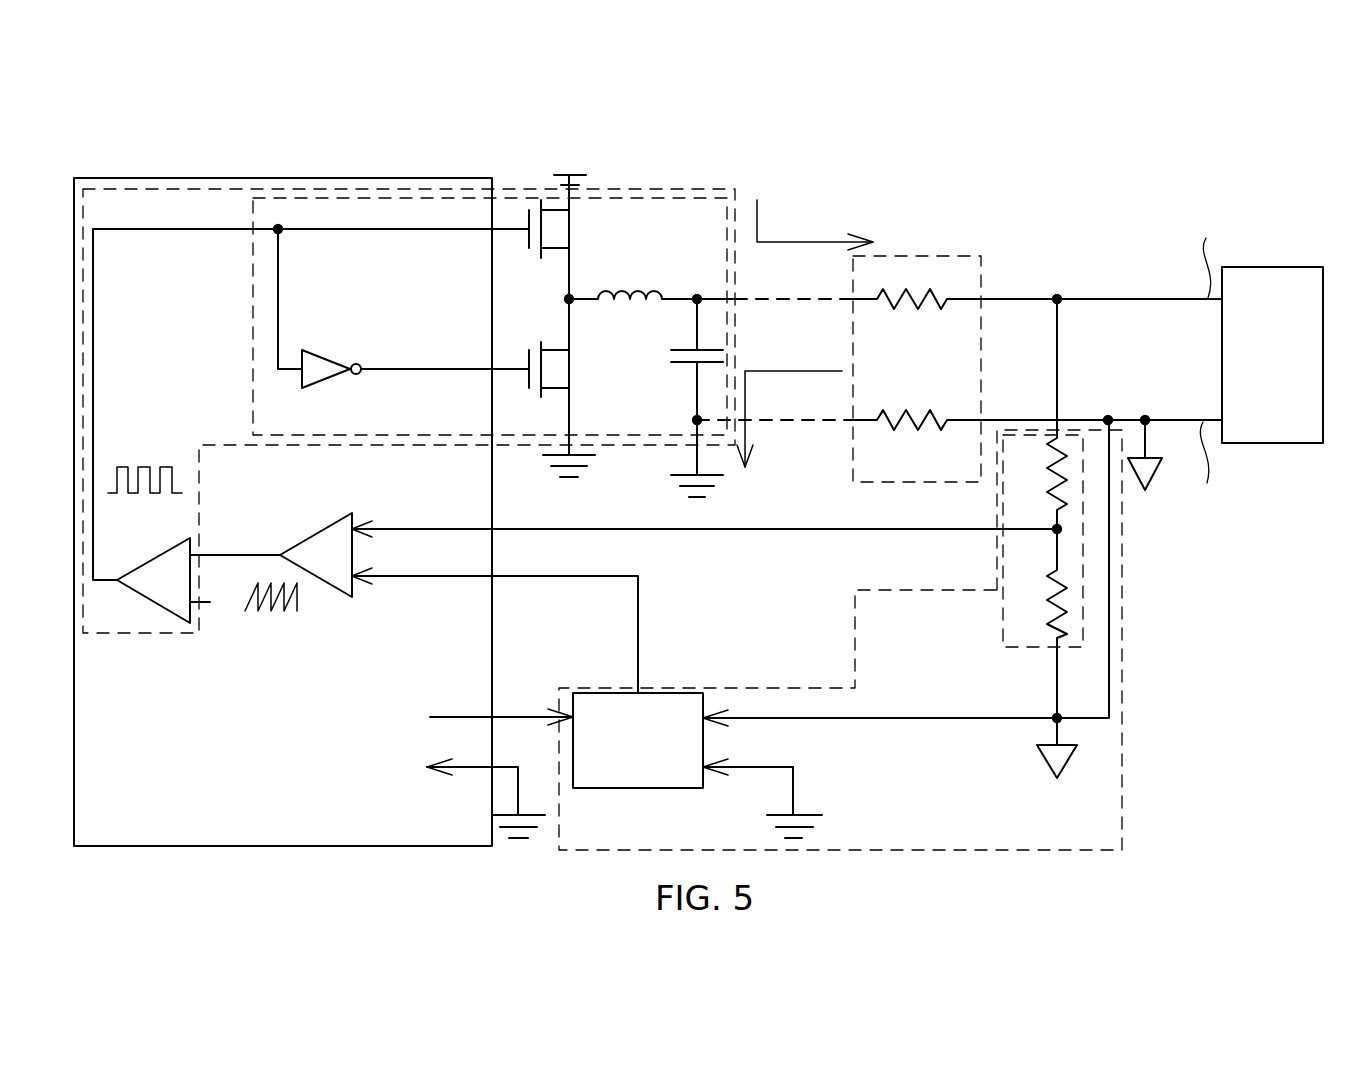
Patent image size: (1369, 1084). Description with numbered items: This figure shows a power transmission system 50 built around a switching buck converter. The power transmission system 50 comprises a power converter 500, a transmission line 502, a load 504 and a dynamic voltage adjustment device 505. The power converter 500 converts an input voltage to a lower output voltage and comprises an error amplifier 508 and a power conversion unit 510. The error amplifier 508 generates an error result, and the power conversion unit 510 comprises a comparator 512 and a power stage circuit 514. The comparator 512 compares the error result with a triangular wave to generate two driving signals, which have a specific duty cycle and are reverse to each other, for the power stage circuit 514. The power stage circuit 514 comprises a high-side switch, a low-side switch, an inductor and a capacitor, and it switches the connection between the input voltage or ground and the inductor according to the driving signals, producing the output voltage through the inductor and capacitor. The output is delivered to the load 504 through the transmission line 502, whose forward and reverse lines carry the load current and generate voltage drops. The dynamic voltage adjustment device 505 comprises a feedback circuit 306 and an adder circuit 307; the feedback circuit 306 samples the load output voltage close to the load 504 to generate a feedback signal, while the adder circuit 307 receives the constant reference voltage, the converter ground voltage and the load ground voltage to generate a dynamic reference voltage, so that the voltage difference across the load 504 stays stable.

The power transmission system 50 is at (1123, 170).
The power converter 500 is at (151, 178).
The transmission line 502 is at (913, 256).
The load 504 is at (1258, 267).
The dynamic voltage adjustment device 505 is at (1122, 656).
The error amplifier 508 is at (337, 518).
The power conversion unit 510 is at (704, 189).
The comparator 512 is at (177, 540).
The power stage circuit 514 is at (630, 198).
The feedback circuit 306 is at (1013, 648).
The adder circuit 307 is at (698, 690).